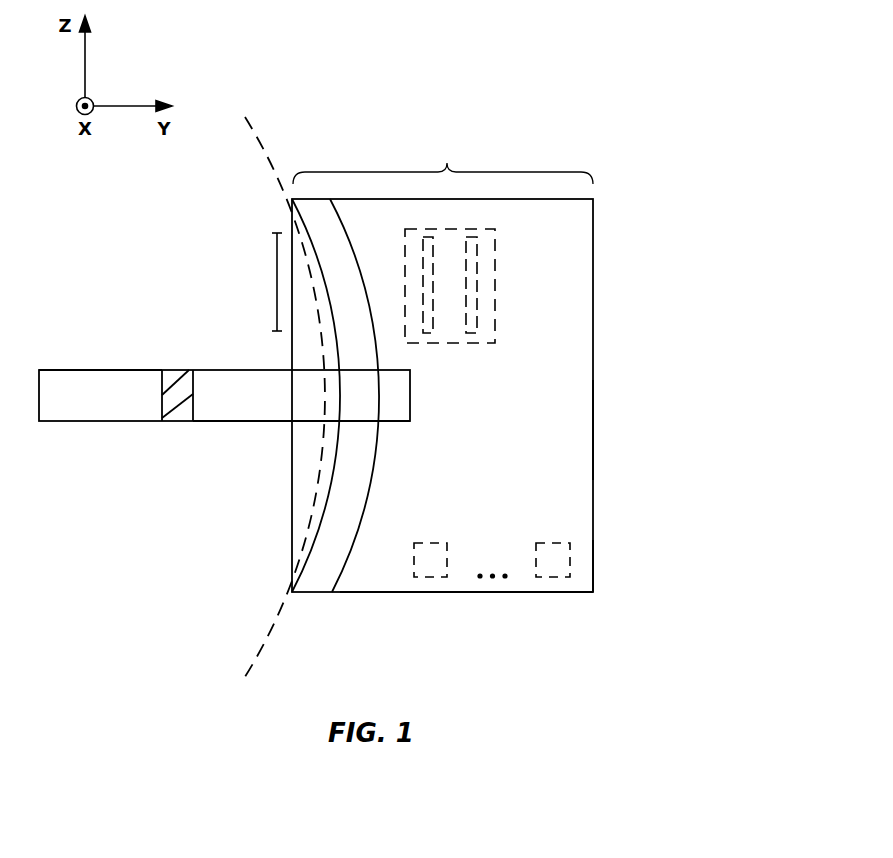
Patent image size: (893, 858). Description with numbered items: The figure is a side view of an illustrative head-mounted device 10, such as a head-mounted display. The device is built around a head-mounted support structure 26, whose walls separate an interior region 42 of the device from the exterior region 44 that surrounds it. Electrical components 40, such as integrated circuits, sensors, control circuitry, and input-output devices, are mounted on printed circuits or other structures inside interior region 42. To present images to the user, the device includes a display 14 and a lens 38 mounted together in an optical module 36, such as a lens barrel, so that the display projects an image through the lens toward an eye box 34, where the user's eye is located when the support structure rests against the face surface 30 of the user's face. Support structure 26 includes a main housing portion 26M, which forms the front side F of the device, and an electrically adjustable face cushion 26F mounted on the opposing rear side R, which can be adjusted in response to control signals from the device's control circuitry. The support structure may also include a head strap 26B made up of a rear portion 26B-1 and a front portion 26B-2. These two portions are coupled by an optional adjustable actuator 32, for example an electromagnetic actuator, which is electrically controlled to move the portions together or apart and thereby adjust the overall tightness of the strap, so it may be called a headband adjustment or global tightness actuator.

The head-mounted device 10 is at (644, 247).
The display 14 is at (471, 236).
The head-mounted support structure 26 is at (443, 162).
The strap 26B is at (224, 392).
The rear portion 26B-1 is at (77, 413).
The front portion 26B-2 is at (258, 422).
The face cushion 26F is at (314, 593).
The main housing portion 26M is at (459, 593).
The face surface 30 is at (262, 645).
The adjustable actuator 32 is at (175, 416).
The eye box 34 is at (277, 232).
The optical module 36 is at (478, 274).
The lens 38 is at (428, 236).
The electrical components 40 is at (555, 543).
The interior region 42 is at (566, 437).
The exterior region 44 is at (551, 112).
The front side F is at (610, 560).
The rear side R is at (271, 562).